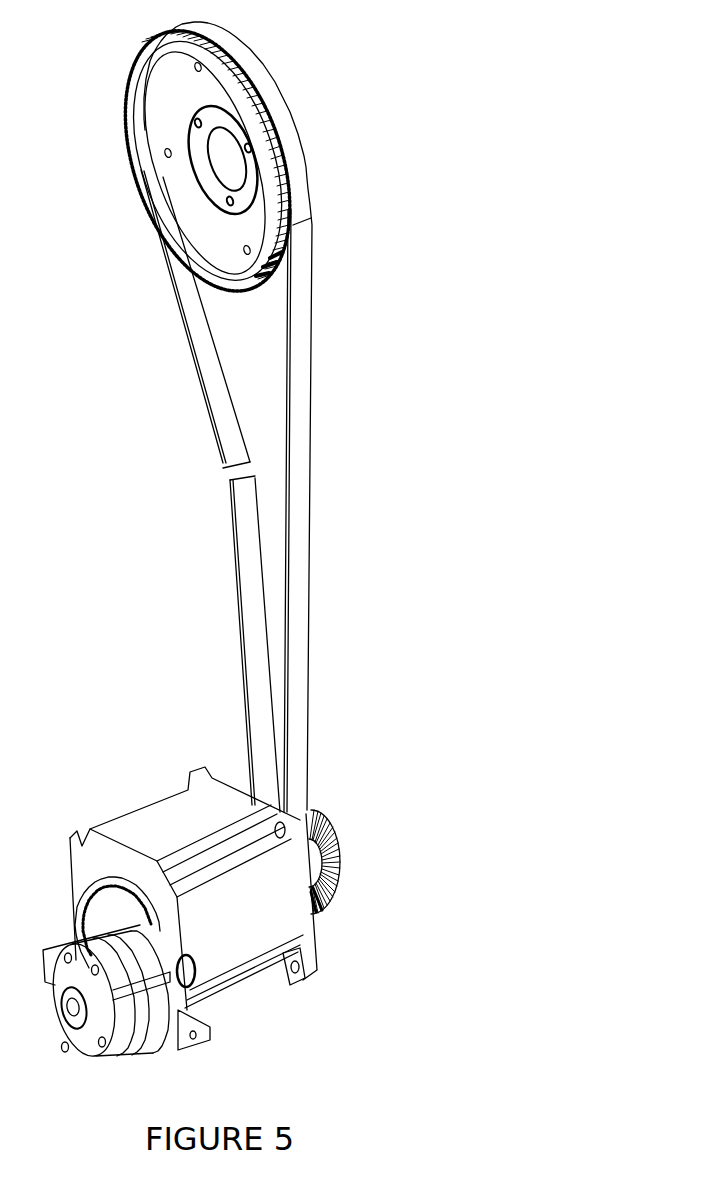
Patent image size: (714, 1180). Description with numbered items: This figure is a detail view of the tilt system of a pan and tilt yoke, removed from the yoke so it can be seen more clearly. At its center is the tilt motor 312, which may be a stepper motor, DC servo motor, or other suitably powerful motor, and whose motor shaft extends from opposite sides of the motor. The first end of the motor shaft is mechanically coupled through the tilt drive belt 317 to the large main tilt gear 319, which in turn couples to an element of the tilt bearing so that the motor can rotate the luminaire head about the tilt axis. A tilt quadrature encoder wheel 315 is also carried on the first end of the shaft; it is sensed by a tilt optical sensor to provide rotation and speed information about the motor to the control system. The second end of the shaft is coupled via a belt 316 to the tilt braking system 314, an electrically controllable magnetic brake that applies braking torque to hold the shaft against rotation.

The tilt motor 312 is at (180, 827).
The tilt braking system 314 is at (95, 1038).
The tilt quadrature encoder wheel 315 is at (337, 887).
The belt 316 is at (192, 975).
The tilt drive belt 317 is at (298, 530).
The main tilt gear 319 is at (172, 170).